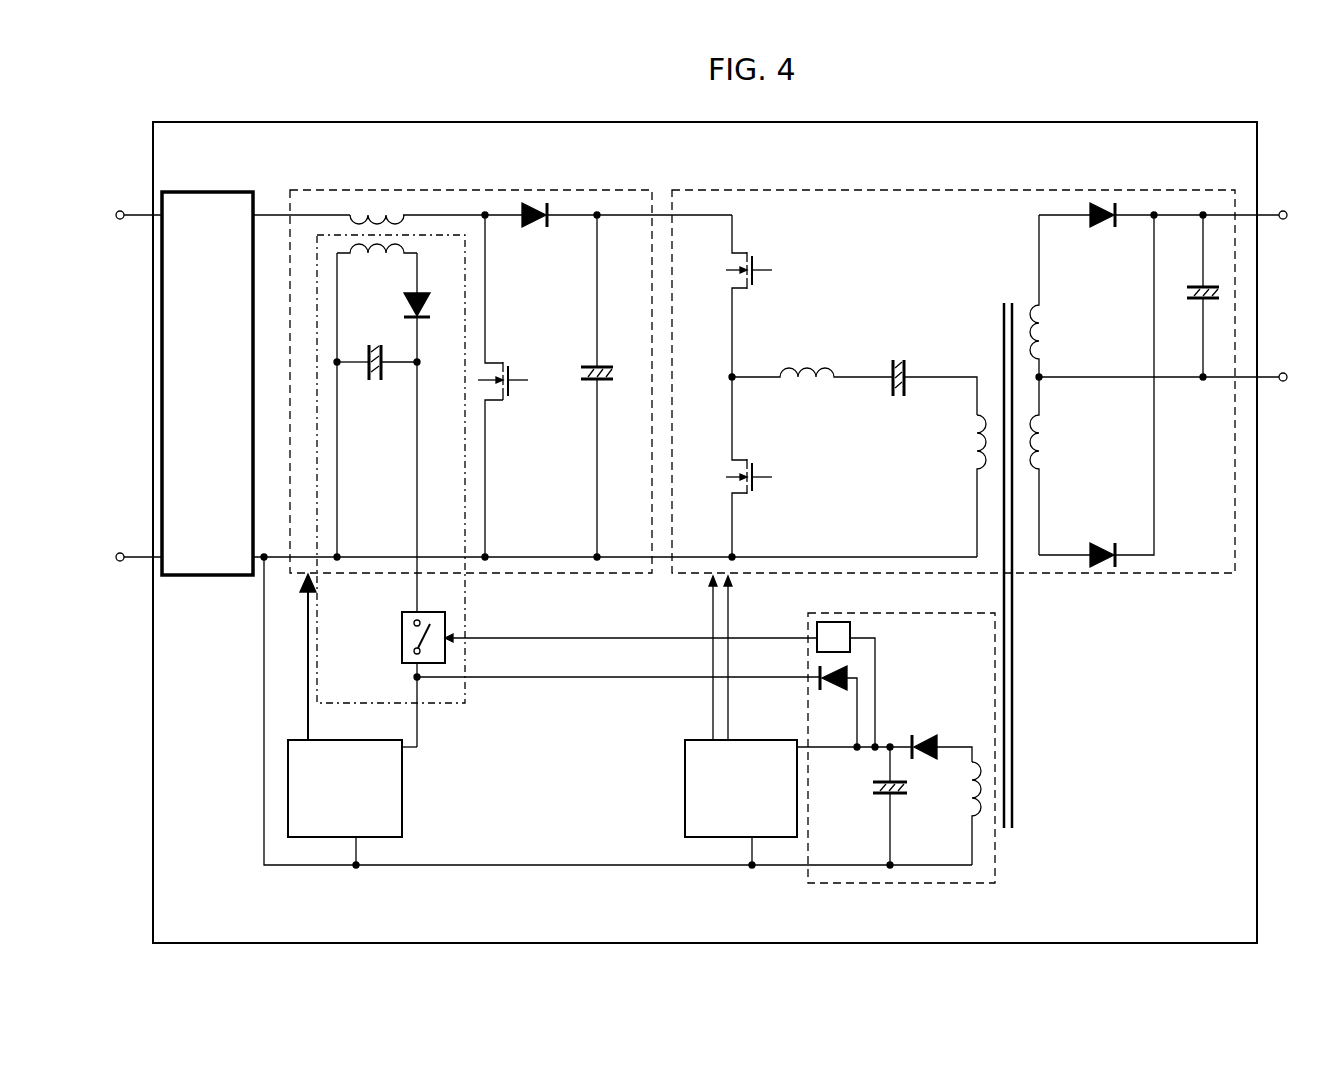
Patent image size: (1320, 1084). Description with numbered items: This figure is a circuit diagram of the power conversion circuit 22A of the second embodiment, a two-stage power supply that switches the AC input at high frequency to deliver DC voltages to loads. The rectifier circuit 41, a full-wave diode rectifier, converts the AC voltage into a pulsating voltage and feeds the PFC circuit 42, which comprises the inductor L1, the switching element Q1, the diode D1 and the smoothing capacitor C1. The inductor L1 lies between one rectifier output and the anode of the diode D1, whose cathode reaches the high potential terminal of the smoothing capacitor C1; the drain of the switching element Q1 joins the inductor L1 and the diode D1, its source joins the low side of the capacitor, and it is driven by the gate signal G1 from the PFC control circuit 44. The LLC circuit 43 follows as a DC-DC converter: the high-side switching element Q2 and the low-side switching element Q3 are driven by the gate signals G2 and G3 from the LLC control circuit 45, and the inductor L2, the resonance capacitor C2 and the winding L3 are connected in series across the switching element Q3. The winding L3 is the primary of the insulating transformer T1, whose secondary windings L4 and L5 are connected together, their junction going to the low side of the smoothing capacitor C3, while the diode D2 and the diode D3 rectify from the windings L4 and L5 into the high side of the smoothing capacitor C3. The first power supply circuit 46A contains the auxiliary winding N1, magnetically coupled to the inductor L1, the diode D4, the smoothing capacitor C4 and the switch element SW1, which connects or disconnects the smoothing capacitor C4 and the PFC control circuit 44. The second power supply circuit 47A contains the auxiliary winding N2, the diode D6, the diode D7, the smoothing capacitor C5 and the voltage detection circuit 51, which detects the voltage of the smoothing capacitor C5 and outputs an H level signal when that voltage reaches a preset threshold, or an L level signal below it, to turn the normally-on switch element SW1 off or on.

The power conversion circuit 22A is at (268, 122).
The rectifier circuit 41 is at (212, 192).
The PFC circuit 42 is at (314, 190).
The LLC circuit 43 is at (725, 184).
The PFC control circuit 44 is at (298, 734).
The LLC control circuit 45 is at (678, 777).
The first power supply circuit 46A is at (470, 605).
The second power supply circuit 47A is at (893, 613).
The voltage detection circuit 51 is at (835, 622).
The inductor L1 is at (379, 217).
The auxiliary winding N1 is at (377, 400).
The diode D4 is at (422, 296).
The smoothing capacitor C4 is at (383, 348).
The diode D1 is at (530, 208).
The switching element Q1 is at (512, 376).
The gate signal G1 is at (451, 550).
The smoothing capacitor C1 is at (588, 365).
The switching element Q2 is at (760, 267).
The gate signal G2 is at (745, 500).
The switching element Q3 is at (760, 471).
The gate signal G3 is at (766, 602).
The inductor L2 is at (814, 366).
The resonance capacitor C2 is at (902, 365).
The insulating transformer T1 is at (979, 307).
The winding L3 is at (974, 446).
The winding L4 is at (1040, 446).
The winding L5 is at (1040, 334).
The diode D3 is at (1102, 208).
The diode D2 is at (1098, 577).
The smoothing capacitor C3 is at (1195, 286).
The switch element SW1 is at (402, 640).
The diode D7 is at (837, 691).
The diode D6 is at (927, 740).
The auxiliary winding N2 is at (972, 793).
The smoothing capacitor C5 is at (900, 798).